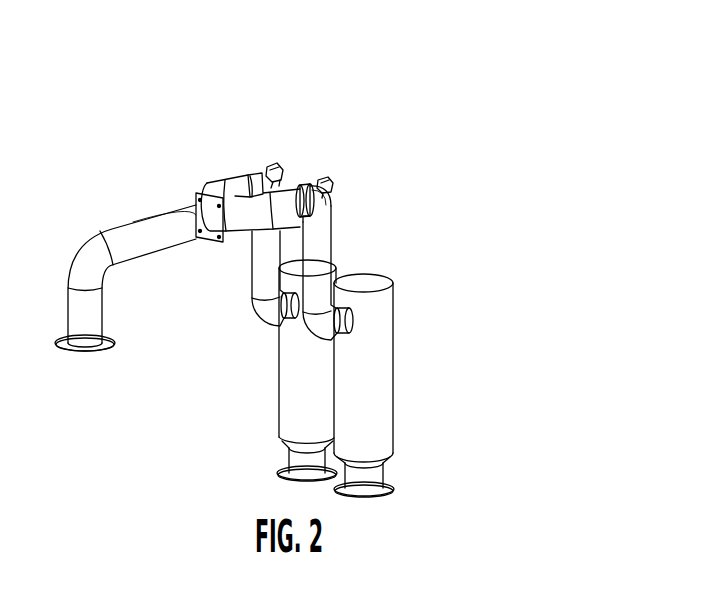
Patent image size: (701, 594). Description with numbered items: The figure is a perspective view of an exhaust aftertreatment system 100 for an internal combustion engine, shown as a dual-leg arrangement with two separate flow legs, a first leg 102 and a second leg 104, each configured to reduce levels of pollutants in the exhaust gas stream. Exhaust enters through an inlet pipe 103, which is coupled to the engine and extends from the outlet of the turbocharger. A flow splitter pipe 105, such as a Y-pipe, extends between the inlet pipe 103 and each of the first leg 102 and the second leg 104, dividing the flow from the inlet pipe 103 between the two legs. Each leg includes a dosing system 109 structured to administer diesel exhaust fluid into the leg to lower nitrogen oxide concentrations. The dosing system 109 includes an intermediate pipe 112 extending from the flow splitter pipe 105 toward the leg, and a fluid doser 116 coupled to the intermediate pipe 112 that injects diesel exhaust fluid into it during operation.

The aftertreatment system 100 is at (446, 94).
The first leg 102 is at (280, 402).
The inlet pipe 103 is at (135, 235).
The second leg 104 is at (388, 412).
The flow splitter pipe 105 is at (212, 178).
The dosing system 109 is at (338, 152).
The intermediate pipe 112 is at (328, 250).
The fluid doser 116 is at (332, 185).